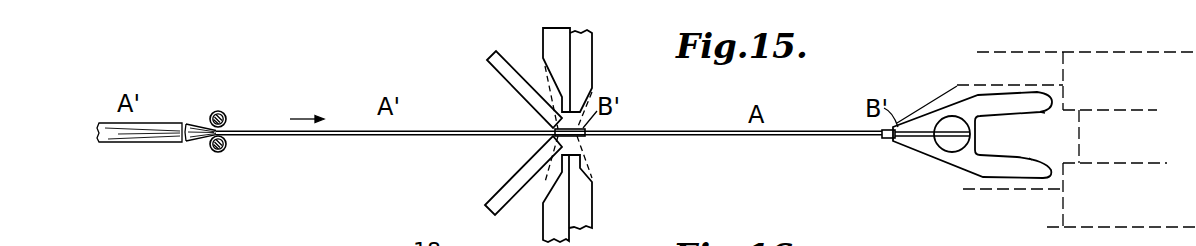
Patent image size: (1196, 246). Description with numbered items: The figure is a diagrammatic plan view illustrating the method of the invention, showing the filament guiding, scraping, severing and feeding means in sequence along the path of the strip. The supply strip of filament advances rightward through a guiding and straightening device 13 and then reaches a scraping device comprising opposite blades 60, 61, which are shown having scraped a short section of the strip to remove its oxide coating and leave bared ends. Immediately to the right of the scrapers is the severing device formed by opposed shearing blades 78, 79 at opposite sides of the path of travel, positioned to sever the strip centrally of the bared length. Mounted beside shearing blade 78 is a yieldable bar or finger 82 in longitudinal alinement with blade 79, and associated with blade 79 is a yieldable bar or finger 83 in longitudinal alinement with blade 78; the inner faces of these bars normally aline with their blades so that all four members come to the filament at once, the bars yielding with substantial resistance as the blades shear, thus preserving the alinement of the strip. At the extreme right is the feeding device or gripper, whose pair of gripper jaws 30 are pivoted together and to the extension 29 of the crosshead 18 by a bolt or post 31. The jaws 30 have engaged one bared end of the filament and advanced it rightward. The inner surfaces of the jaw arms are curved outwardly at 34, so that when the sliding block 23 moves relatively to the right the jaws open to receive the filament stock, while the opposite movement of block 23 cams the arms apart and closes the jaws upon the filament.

The guiding and straightening device 13 is at (225, 113).
The crosshead 18 is at (1086, 81).
The sliding block 23 is at (1115, 136).
The extension 29 is at (1000, 84).
The gripper jaws 30 is at (916, 118).
The bolt or post 31 is at (952, 116).
The outwardly curved surfaces 34 is at (1043, 128).
The scraping blade 60 is at (501, 203).
The scraping blade 61 is at (514, 75).
The shearing blade 78 is at (557, 78).
The shearing blade 79 is at (585, 182).
The yieldable bar or finger 82 is at (588, 65).
The yieldable bar or finger 83 is at (558, 189).